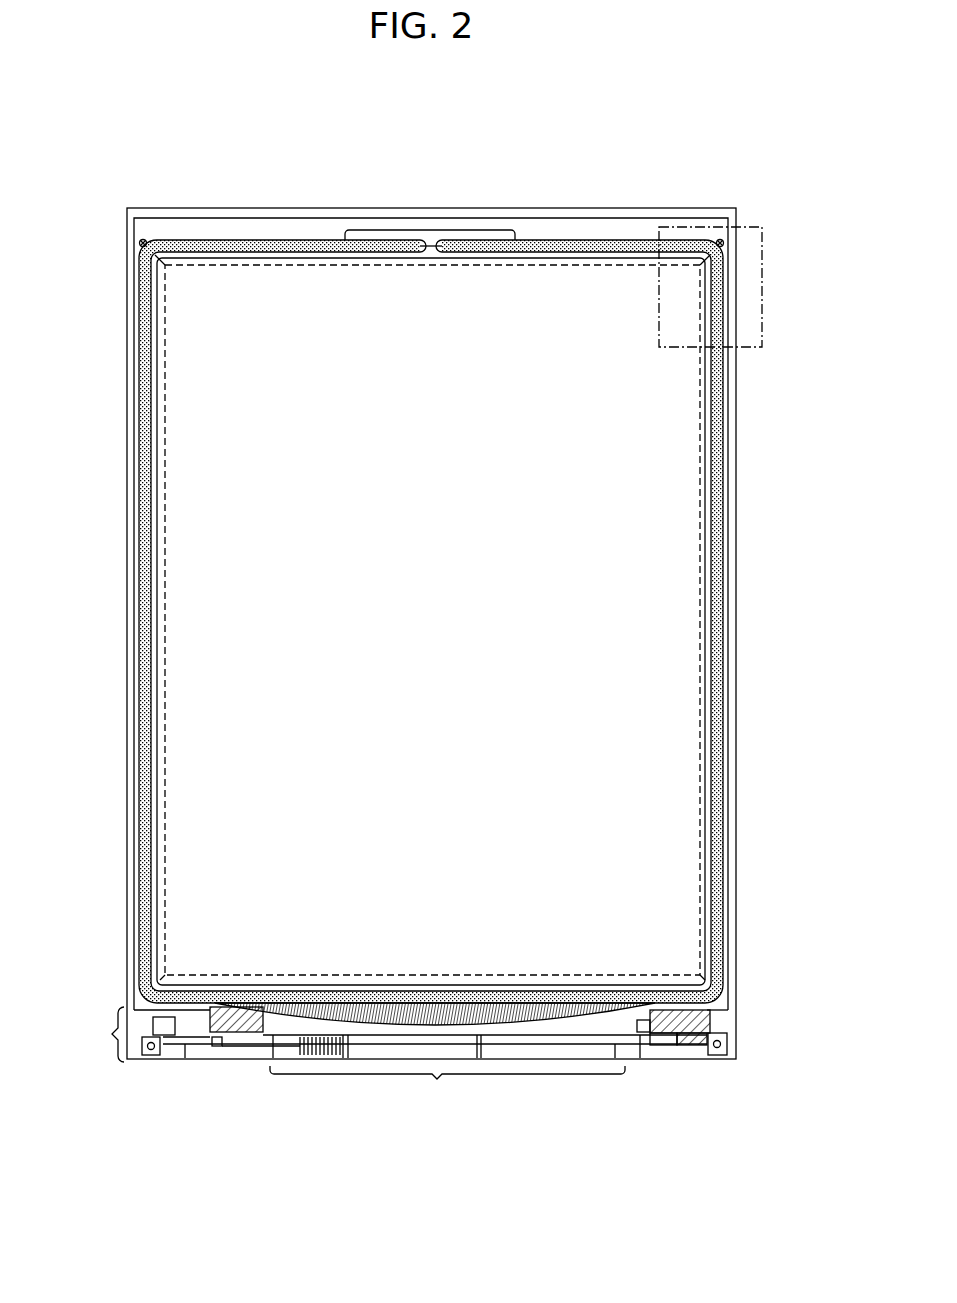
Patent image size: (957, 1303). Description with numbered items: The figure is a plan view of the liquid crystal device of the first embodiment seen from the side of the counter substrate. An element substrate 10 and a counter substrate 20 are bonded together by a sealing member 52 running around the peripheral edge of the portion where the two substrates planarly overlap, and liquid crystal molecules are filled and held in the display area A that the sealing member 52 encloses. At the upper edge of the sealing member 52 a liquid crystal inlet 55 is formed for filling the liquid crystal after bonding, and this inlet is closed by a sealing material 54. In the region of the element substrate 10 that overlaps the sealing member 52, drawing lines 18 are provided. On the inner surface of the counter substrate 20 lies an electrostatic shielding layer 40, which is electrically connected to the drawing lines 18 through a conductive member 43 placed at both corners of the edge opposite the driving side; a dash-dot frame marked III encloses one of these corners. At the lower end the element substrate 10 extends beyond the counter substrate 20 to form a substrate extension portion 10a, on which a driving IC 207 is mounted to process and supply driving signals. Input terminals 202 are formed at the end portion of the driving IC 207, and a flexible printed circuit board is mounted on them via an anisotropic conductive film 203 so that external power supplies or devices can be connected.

The element substrate 10 is at (556, 210).
The substrate extension portion 10a is at (95, 1034).
The counter substrate 20 is at (611, 228).
The drawing lines 18 is at (138, 259).
The conductive member 43 is at (143, 240).
The sealing member 52 is at (723, 643).
The sealing material 54 is at (384, 230).
The liquid crystal inlet 55 is at (449, 243).
The electrostatic shielding layer 40 is at (703, 700).
The display area A is at (298, 628).
The input terminals 202 is at (435, 1072).
The anisotropic conductive film 203 is at (224, 1052).
The driving IC 207 is at (622, 1028).
The section line III is at (772, 322).